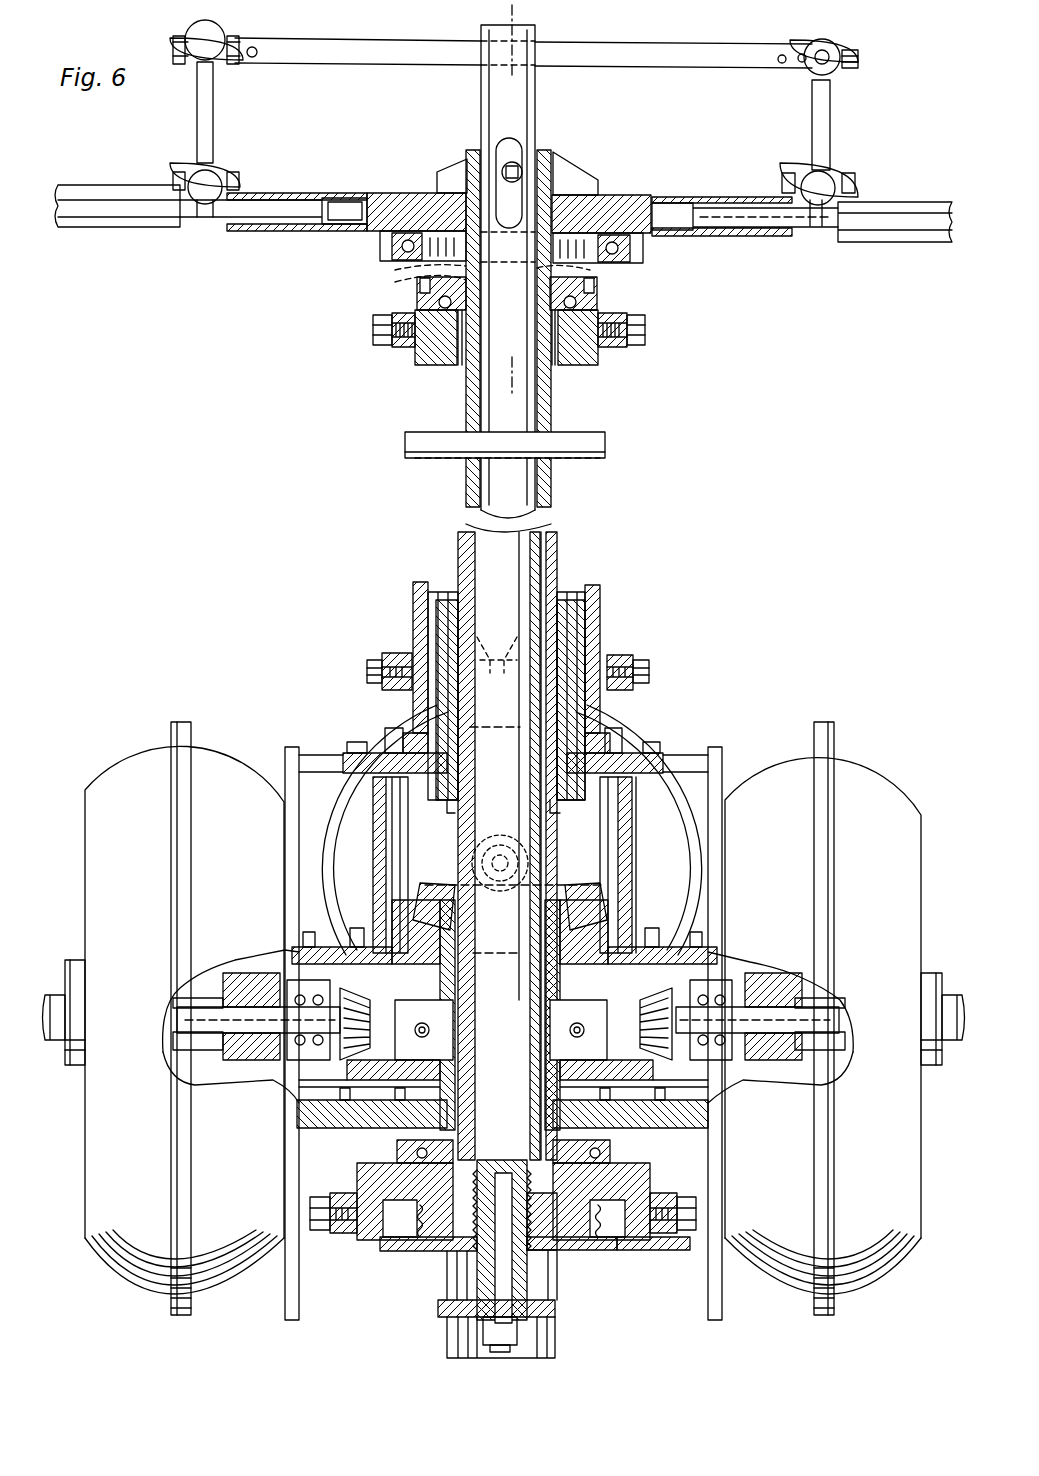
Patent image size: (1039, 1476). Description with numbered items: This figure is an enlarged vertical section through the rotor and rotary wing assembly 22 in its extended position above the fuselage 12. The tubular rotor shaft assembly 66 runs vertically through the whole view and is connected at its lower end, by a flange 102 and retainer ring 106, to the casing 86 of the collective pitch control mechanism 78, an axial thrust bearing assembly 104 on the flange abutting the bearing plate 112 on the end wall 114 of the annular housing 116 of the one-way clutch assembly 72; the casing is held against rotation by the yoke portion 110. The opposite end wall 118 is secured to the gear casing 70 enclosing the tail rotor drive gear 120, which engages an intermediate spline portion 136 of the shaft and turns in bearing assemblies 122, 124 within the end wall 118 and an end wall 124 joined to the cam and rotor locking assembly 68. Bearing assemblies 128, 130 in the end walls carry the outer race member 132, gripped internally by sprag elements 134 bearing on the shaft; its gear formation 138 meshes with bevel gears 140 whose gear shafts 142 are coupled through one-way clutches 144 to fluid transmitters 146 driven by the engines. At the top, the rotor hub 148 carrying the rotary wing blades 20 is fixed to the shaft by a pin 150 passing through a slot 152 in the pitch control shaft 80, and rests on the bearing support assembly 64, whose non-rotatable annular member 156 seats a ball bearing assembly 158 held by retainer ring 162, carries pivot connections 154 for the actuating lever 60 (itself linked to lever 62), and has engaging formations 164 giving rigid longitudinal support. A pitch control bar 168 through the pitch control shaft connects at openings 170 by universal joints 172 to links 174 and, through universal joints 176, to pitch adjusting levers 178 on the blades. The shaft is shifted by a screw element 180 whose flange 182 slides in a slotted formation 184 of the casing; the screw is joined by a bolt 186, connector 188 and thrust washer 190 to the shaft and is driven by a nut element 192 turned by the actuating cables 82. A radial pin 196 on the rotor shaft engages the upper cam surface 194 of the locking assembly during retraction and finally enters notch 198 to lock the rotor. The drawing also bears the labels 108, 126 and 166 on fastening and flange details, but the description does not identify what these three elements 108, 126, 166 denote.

The fuselage 12 is at (512, 14).
The rotary wing blades 20 is at (890, 232).
The rotary wing assembly 22 is at (727, 252).
The actuating lever 60 is at (612, 357).
The lever 62 is at (640, 665).
The bearing support assembly 64 is at (408, 368).
The rotor shaft assembly 66 is at (460, 551).
The cam and rotor locking assembly 68 is at (600, 640).
The gear casing 70 is at (622, 810).
The one-way clutch assembly 72 is at (330, 1092).
The collective pitch control mechanism 78 is at (572, 1268).
The pitch control shaft 80 is at (496, 104).
The actuating cables 82 is at (625, 1218).
The casing 86 is at (375, 1250).
The flange 102 is at (395, 1250).
The axial thrust bearing assembly 104 is at (405, 1130).
The retainer ring 106 is at (625, 1145).
The bolt 108 is at (290, 1215).
The yoke portion 110 is at (715, 1228).
The bearing plate 112 is at (672, 1120).
The end wall 114 is at (690, 1112).
The annular housing 116 is at (660, 955).
The end wall 118 is at (330, 945).
The tail rotor drive gear 120 is at (588, 900).
The bearing assembly 122 is at (372, 940).
The end wall 124 is at (575, 758).
The flange 126 is at (368, 752).
The bearing assembly 128 is at (592, 945).
The bearing assembly 130 is at (680, 1085).
The outer race member 132 is at (335, 1058).
The sprag elements 134 is at (448, 1020).
The intermediate spline portion 136 is at (575, 640).
The gear formation 138 is at (780, 1078).
The bevel gears 140 is at (300, 955).
The gear shafts 142 is at (205, 1012).
The one-way clutches 144 is at (750, 1000).
The fluid transmitters 146 is at (133, 752).
The rotor hub 148 is at (415, 193).
The pin 150 is at (524, 145).
The slot 152 is at (525, 197).
The pivot connections 154 is at (632, 338).
The annular member 156 is at (438, 366).
The ball bearing assembly 158 is at (588, 305).
The retainer ring 162 is at (410, 285).
The engaging formations 164 is at (420, 273).
The bracket 166 is at (380, 247).
The pitch control bar 168 is at (332, 56).
The openings 170 is at (778, 66).
The universal joints 172 is at (835, 46).
The links 174 is at (828, 122).
The universal joints 176 is at (838, 178).
The pitch adjusting levers 178 is at (813, 230).
The screw element 180 is at (480, 1270).
The flange 182 is at (558, 1310).
The slotted formation 184 is at (450, 1342).
The bolt 186 is at (548, 1275).
The connector 188 is at (539, 1030).
The thrust washer 190 is at (428, 1216).
The nut element 192 is at (580, 1230).
The cam surface 194 is at (558, 568).
The pin 196 is at (592, 447).
The notch 198 is at (425, 620).